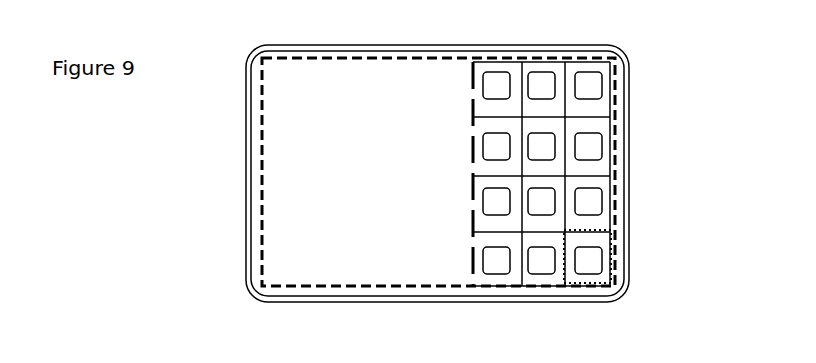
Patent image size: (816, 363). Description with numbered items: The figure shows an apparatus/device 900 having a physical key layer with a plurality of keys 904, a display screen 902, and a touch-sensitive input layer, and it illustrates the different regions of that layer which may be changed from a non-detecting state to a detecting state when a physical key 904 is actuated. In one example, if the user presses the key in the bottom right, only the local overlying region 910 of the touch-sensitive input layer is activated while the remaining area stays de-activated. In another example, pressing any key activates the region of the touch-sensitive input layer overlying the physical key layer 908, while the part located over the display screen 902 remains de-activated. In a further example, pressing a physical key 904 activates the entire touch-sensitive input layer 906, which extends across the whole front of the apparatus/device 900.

The apparatus/device 900 is at (652, 112).
The display screen 902 is at (322, 149).
The physical key 904 is at (592, 200).
The entire touch-sensitive input layer 906 is at (262, 85).
The region of the touch-sensitive input layer overlying the physical key layer 908 is at (473, 212).
The local overlying region 910 is at (598, 232).